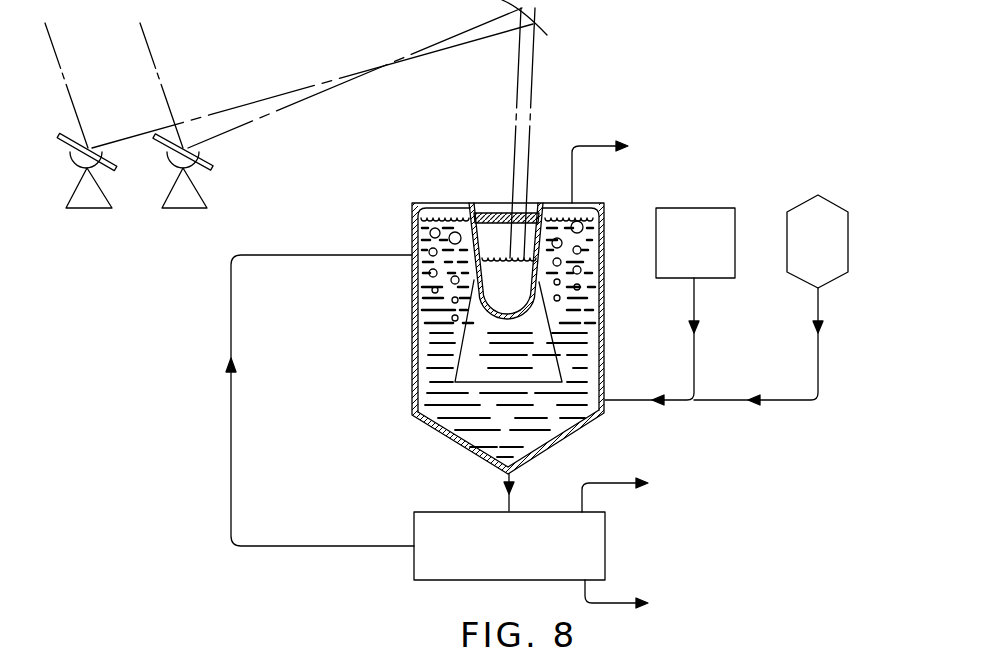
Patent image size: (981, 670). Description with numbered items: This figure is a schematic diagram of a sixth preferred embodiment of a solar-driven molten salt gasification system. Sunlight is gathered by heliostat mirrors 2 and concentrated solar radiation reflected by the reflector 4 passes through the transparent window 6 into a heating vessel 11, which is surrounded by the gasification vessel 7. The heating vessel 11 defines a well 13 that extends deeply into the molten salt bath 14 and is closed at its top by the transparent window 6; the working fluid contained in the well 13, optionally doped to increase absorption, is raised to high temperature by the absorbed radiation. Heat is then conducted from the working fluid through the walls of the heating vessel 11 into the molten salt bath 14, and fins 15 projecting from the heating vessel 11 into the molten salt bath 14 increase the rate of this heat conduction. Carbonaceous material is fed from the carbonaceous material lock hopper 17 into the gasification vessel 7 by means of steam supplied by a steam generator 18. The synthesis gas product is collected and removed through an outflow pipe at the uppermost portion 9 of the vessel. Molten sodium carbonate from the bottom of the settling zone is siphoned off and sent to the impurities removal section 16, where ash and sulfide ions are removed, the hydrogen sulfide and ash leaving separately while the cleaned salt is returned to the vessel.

The heliostat mirror 2 is at (78, 188).
The reflector 4 is at (533, 23).
The transparent window 6 is at (493, 212).
The gasification vessel 7 is at (412, 224).
The uppermost portion 9 is at (590, 204).
The heating vessel 11 is at (478, 258).
The well 13 is at (506, 258).
The molten salt bath 14 is at (573, 325).
The fins 15 is at (478, 416).
The impurities removal section 16 is at (414, 554).
The carbonaceous material lock hopper 17 is at (818, 196).
The steam generator 18 is at (667, 208).